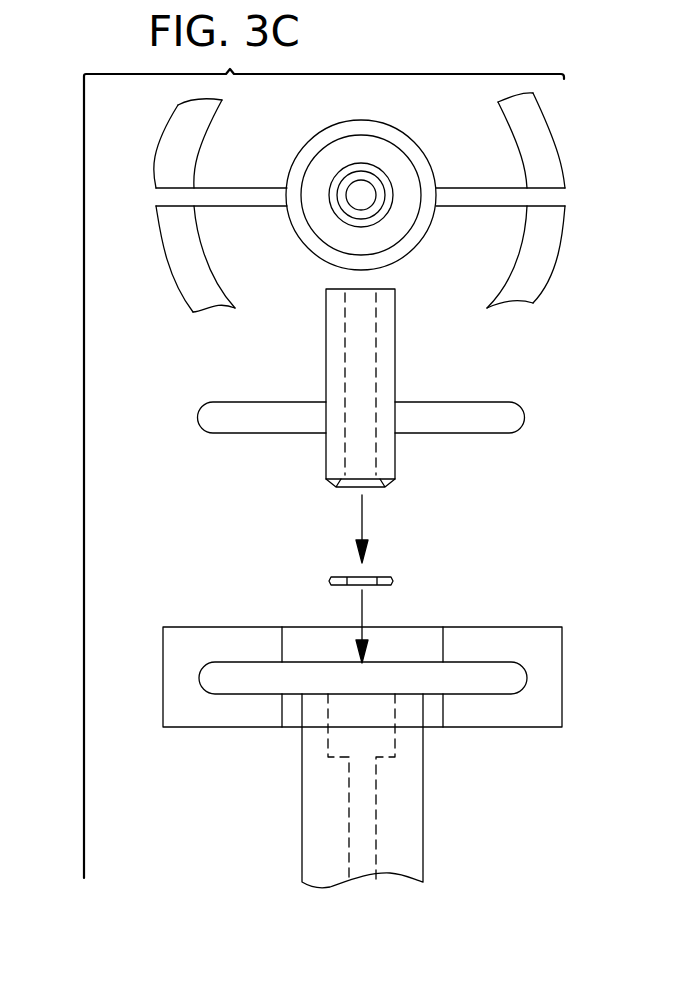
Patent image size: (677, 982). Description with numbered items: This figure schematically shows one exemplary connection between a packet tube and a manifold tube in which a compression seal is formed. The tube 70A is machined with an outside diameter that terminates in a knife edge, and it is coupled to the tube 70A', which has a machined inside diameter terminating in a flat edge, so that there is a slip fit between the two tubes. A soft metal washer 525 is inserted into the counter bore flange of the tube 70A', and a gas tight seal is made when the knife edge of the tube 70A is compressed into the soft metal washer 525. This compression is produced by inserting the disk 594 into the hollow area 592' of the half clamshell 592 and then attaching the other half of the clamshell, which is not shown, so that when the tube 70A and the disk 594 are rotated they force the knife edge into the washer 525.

The half clamshell 592 is at (403, 410).
The disk 594 is at (507, 416).
The tube 70A is at (406, 388).
The soft metal washer 525 is at (383, 577).
The hollow area 592' is at (327, 715).
The tube 70A' is at (417, 791).